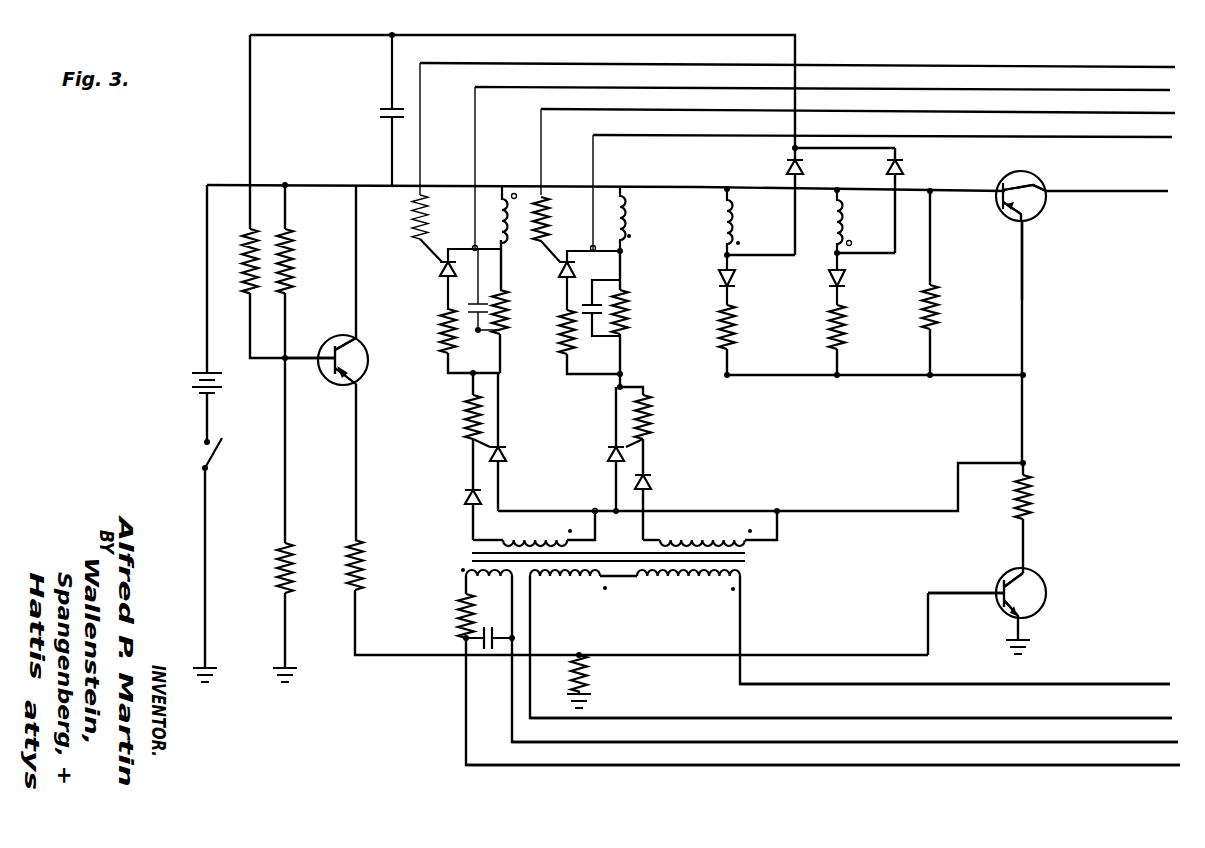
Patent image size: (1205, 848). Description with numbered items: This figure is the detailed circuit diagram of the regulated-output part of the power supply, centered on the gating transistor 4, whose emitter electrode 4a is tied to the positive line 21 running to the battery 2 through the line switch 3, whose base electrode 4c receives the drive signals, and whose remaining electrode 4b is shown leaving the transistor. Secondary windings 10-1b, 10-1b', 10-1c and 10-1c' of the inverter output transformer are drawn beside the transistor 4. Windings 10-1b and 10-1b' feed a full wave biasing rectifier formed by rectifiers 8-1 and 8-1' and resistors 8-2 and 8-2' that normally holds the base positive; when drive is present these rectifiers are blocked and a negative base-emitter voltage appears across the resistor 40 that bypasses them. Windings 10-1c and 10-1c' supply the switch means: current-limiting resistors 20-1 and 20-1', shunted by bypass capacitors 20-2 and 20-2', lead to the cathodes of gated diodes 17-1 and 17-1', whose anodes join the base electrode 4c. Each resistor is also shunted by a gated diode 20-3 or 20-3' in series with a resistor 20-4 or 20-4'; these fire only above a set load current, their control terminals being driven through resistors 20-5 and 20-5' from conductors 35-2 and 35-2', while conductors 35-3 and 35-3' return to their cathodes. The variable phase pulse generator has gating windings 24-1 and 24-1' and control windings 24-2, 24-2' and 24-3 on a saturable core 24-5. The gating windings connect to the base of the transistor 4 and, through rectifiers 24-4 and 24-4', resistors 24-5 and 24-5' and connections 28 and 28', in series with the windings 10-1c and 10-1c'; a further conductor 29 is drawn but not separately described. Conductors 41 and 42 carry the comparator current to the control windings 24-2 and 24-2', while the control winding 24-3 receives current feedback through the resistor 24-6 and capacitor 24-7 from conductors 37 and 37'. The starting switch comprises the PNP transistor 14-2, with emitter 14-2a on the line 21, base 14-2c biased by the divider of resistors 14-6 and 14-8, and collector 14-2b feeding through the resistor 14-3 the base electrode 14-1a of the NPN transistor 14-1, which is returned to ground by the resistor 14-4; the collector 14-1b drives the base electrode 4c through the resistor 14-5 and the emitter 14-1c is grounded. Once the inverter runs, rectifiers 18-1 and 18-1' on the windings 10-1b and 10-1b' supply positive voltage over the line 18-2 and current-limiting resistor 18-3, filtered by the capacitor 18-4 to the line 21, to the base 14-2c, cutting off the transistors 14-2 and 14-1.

The battery 2 is at (197, 386).
The line switch 3 is at (216, 447).
The gating transistor 4 is at (1044, 188).
The emitter electrode 4a is at (1012, 205).
The transistor collector 4b is at (1040, 188).
The base electrode 4c is at (1035, 220).
The semiconductor rectifier 8-1 is at (697, 288).
The semiconductor rectifier 8-1' is at (864, 296).
The resistor 8-2 is at (872, 341).
The resistor 8-2' is at (864, 341).
The secondary winding 10-1b is at (717, 228).
The secondary winding 10-1b' is at (830, 235).
The secondary winding 10-1c is at (515, 191).
The secondary winding 10-1c' is at (639, 197).
The NPN transistor 14-1 is at (1047, 595).
The base electrode 14-1a is at (1003, 590).
The collector electrode 14-1b is at (1028, 578).
The emitter electrode 14-1c is at (1010, 616).
The PNP transistor 14-2 is at (366, 378).
The emitter electrode 14-2a is at (346, 337).
The collector electrode 14-2b is at (345, 384).
The base electrode 14-2c is at (339, 352).
The resistor 14-3 is at (353, 568).
The resistor 14-4 is at (590, 690).
The resistor 14-5 is at (1031, 498).
The resistor 14-6 is at (289, 270).
The resistor 14-8 is at (285, 553).
The gated diode 17-1 is at (515, 442).
The gated diode 17-1' is at (582, 450).
The rectifier 18-1 is at (759, 197).
The rectifier 18-1' is at (935, 197).
The line 18-2 is at (509, 35).
The current-limiting resistor 18-3 is at (240, 266).
The filter capacitor 18-4 is at (378, 112).
The current-limiting resistor 20-1 is at (527, 306).
The current-limiting resistor 20-1' is at (660, 317).
The bypass capacitor 20-2 is at (486, 291).
The bypass capacitor 20-2' is at (643, 310).
The gated diode 20-3 is at (437, 279).
The gated diode 20-3' is at (626, 280).
The resistor 20-4 is at (436, 341).
The resistor 20-4' is at (566, 353).
The resistor 20-5 is at (408, 228).
The current level establishing resistor 20-5' is at (567, 212).
The positive line 21 is at (322, 185).
The gating winding 24-1 is at (535, 511).
The gating winding 24-1' is at (711, 511).
The control winding 24-2 is at (851, 644).
The control winding 24-2' is at (903, 627).
The control winding 24-3 is at (462, 566).
The rectifier 24-4 is at (433, 510).
The rectifier 24-4' is at (681, 492).
The core 24-5 is at (615, 494).
The resistor 24-5' is at (684, 435).
The resistor 24-6 is at (460, 608).
The capacitor 24-7 is at (480, 648).
The connection 28 is at (479, 370).
The connection 28' is at (654, 383).
The conductor 29 is at (836, 508).
The conductor 35-2 is at (797, 112).
The conductor 35-2' is at (845, 143).
The conductor 35-3 is at (817, 150).
The conductor 35-3' is at (880, 183).
The conductor 37 is at (845, 733).
The conductor 37' is at (826, 756).
The resistor 40 is at (938, 310).
The conductor 41 is at (1098, 684).
The conductor 42 is at (1124, 718).